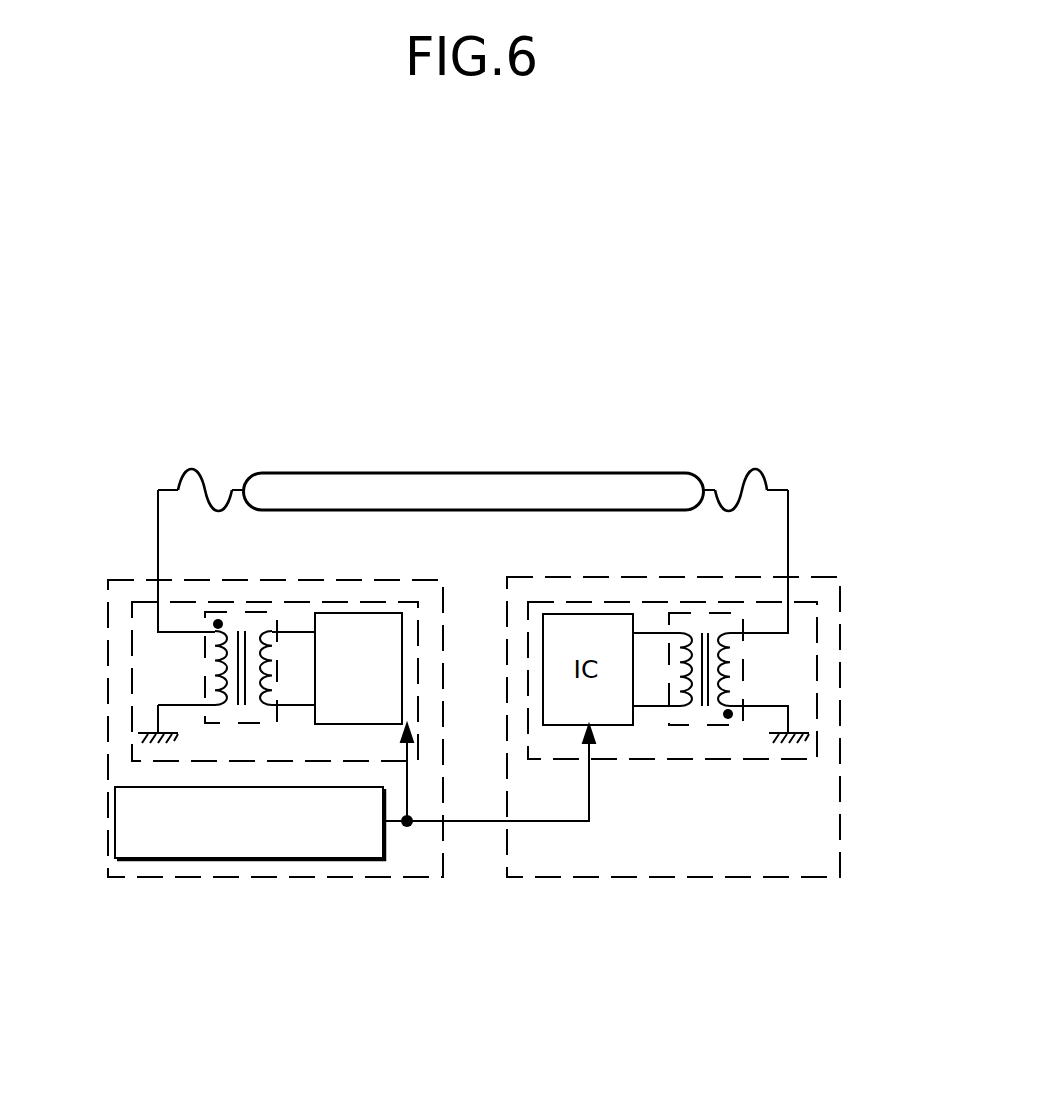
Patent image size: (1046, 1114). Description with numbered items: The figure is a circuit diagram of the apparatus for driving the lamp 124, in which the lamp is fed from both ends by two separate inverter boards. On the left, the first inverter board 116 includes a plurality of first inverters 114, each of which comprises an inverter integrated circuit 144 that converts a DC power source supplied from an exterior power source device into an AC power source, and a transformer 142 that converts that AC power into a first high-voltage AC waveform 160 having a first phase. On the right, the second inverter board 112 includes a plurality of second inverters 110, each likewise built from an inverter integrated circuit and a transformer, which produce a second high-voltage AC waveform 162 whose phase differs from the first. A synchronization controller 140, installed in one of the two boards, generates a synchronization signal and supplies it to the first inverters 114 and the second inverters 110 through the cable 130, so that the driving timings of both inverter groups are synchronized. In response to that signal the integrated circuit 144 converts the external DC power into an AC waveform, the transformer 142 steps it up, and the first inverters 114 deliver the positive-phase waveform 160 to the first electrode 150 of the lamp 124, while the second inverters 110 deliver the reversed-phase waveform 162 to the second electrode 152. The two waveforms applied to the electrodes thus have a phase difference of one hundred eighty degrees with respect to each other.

The second inverter 110 is at (817, 720).
The second inverter board 112 is at (840, 833).
The first inverter 114 is at (132, 718).
The first inverter board 116 is at (125, 878).
The lamp 124 is at (478, 473).
The cable 130 is at (465, 821).
The synchronization controller 140 is at (270, 858).
The transformer 142 is at (215, 672).
The inverter integrated circuit 144 is at (402, 697).
The first electrode 150 is at (265, 470).
The second electrode 152 is at (680, 470).
The first high-voltage AC waveform 160 is at (194, 468).
The second high-voltage AC waveform 162 is at (755, 468).